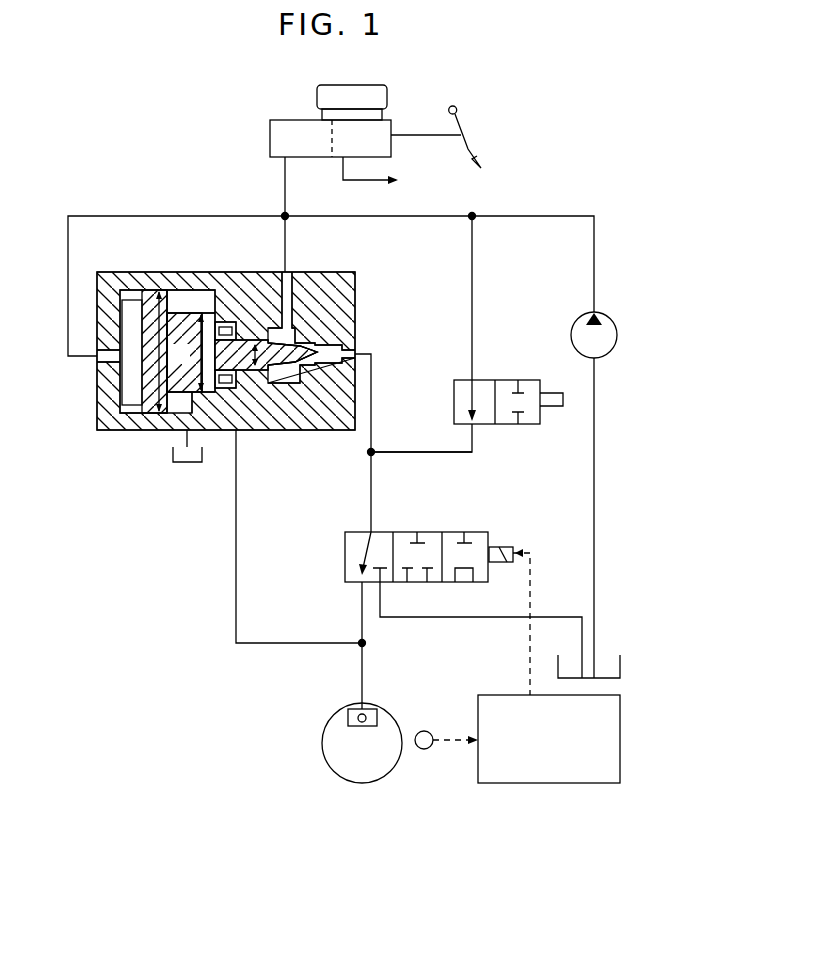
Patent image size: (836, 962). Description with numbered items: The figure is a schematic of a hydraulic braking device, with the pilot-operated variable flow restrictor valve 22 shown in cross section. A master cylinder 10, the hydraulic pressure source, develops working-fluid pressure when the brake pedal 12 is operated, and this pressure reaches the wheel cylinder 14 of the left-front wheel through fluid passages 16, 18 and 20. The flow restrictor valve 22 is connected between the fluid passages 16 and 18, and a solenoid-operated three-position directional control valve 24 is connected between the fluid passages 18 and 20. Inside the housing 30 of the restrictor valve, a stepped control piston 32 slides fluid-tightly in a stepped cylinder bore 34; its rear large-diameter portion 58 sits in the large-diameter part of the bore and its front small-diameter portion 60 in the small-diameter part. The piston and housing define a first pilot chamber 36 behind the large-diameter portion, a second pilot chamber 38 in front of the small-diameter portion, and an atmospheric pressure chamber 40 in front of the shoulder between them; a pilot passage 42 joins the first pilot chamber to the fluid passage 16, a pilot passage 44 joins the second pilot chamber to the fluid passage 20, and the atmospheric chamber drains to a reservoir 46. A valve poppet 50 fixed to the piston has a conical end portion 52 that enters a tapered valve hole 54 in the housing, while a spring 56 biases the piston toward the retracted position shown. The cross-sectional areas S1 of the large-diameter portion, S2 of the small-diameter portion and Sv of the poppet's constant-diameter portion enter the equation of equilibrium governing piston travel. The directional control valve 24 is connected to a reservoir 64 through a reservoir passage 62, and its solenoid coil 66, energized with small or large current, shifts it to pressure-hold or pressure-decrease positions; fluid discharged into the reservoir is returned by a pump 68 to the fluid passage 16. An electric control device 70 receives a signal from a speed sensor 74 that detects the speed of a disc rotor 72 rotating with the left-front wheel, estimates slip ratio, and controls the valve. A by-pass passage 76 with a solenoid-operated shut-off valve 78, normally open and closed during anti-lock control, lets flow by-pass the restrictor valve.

The master cylinder 10 is at (280, 136).
The brake pedal 12 is at (470, 145).
The wheel cylinder 14 is at (348, 716).
The fluid passage 16 is at (287, 238).
The fluid passage 18 is at (371, 426).
The fluid passage 20 is at (362, 672).
The pilot-operated variable flow restrictor valve 22 is at (250, 382).
The solenoid-operated three-position directional control valve 24 is at (446, 525).
The housing 30 is at (355, 284).
The stepped control piston 32 is at (157, 400).
The stepped cylinder bore 34 is at (165, 272).
The first pilot chamber 36 is at (122, 377).
The second pilot chamber 38 is at (222, 322).
The atmospheric pressure chamber 40 is at (175, 412).
The pilot passage 42 is at (98, 216).
The pilot passage 44 is at (236, 612).
The reservoir 46 is at (178, 463).
The valve poppet 50 is at (280, 362).
The conical end portion 52 is at (300, 328).
The tapered valve hole 54 is at (355, 329).
The spring 56 is at (300, 364).
The rear large-diameter portion 58 is at (120, 413).
The front small-diameter portion 60 is at (208, 390).
The reservoir passage 62 is at (480, 617).
The reservoir 64 is at (620, 666).
The solenoid coil 66 is at (500, 547).
The pump 68 is at (571, 338).
The electric control device 70 is at (597, 783).
The disc rotor 72 is at (375, 770).
The speed sensor 74 is at (424, 750).
The by-pass passage 76 is at (418, 452).
The solenoid-operated shut-off valve 78 is at (521, 434).
The transverse cross sectional area of the large-diameter portion S1 is at (185, 352).
The transverse cross sectional area of the small-diameter portion S2 is at (185, 290).
The transverse cross sectional area of the valve poppet constant-diameter portion Sv is at (256, 367).